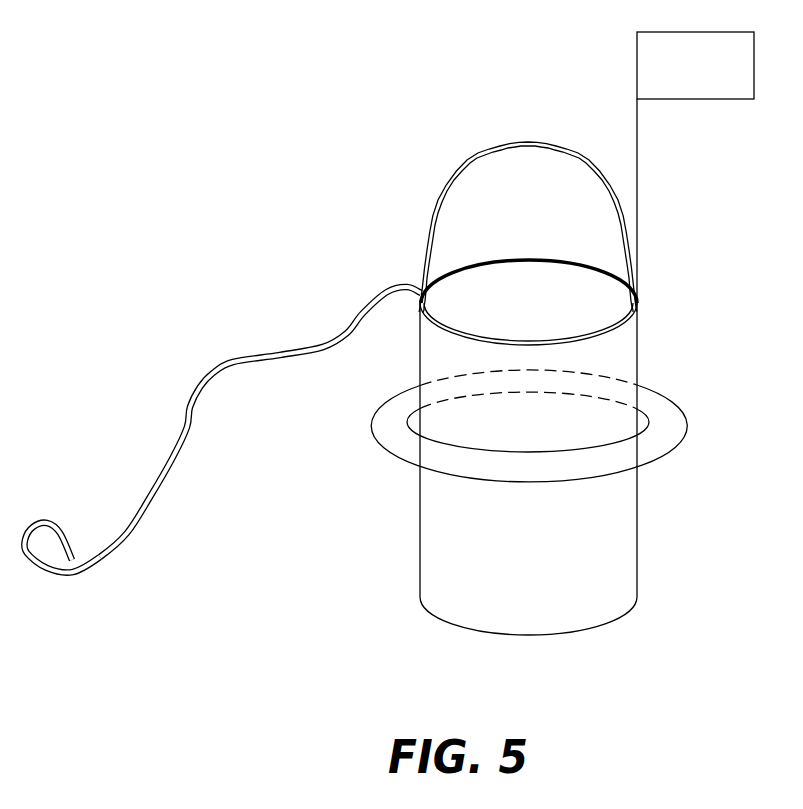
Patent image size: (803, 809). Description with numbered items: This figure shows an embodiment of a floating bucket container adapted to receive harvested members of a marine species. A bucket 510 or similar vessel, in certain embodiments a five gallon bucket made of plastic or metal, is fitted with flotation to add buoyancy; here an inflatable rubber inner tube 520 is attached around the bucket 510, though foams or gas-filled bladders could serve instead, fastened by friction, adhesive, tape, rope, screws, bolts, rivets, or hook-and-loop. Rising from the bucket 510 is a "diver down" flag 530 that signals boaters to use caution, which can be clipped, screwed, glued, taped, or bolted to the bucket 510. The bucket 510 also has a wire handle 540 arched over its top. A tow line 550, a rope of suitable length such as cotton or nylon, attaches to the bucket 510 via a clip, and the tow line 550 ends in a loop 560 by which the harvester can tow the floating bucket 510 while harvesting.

The bucket 510 is at (638, 512).
The inflatable rubber inner tube 520 is at (677, 400).
The diver down flag 530 is at (638, 152).
The wire handle 540 is at (440, 210).
The tow line 550 is at (357, 318).
The loop 560 is at (60, 527).